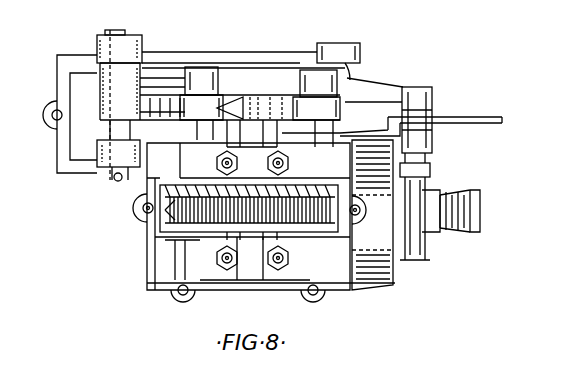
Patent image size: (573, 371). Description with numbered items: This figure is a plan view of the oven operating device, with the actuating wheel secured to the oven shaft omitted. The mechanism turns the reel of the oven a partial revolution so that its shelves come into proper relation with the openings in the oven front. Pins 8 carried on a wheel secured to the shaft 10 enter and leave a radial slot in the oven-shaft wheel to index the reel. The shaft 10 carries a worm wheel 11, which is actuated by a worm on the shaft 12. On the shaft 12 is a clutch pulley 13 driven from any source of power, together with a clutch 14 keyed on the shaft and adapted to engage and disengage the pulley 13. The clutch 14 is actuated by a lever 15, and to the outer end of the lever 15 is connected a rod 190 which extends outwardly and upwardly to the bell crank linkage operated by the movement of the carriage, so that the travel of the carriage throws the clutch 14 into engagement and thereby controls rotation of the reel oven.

The pins 8 is at (205, 77).
The shaft 10 is at (255, 281).
The worm wheel 11 is at (165, 207).
The shaft 12 is at (460, 192).
The clutch pulley 13 is at (380, 290).
The clutch 14 is at (432, 172).
The lever 15 is at (432, 105).
The rod 190 is at (480, 116).